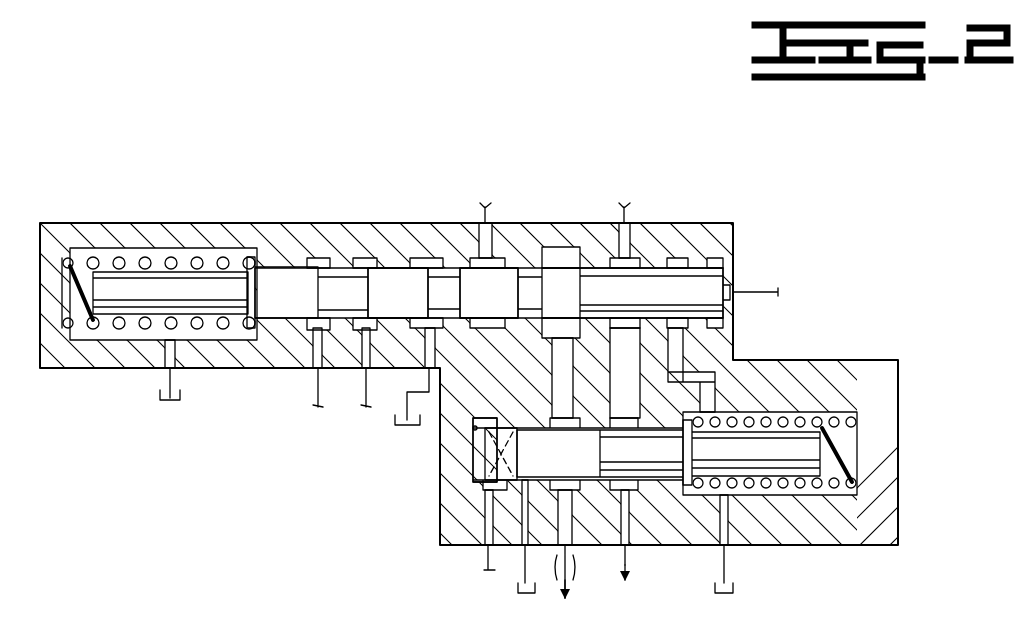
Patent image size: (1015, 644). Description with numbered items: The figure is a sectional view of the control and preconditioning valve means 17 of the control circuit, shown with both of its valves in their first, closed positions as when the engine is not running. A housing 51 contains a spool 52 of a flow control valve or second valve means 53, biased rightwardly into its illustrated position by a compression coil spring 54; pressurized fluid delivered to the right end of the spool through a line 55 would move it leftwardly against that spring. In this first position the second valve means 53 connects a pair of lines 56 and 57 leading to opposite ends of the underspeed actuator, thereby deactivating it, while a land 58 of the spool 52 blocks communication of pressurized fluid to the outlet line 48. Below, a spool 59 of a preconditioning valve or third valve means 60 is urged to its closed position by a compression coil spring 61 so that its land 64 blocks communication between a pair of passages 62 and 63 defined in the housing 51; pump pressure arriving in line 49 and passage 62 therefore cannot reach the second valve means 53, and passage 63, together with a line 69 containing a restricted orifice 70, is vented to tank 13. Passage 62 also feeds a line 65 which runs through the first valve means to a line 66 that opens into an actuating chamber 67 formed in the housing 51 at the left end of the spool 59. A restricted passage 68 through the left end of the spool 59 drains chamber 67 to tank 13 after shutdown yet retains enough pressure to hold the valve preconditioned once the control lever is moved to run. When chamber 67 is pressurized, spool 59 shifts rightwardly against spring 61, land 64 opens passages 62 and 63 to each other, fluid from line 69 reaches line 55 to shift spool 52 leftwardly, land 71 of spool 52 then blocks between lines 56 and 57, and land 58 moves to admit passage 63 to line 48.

The tank 13 is at (160, 398).
The control and preconditioning valve means 17 is at (188, 450).
The outlet line 48 is at (492, 207).
The line 49 is at (628, 207).
The housing 51 is at (707, 232).
The spool 52 is at (275, 252).
The second valve means 53 is at (352, 223).
The compression coil spring 54 is at (125, 262).
The line 55 is at (760, 292).
The line 56 is at (313, 400).
The line 57 is at (366, 400).
The land 58 is at (477, 278).
The spool 59 is at (475, 485).
The third valve means 60 is at (654, 517).
The compression coil spring 61 is at (797, 410).
The passage 62 is at (638, 386).
The passage 63 is at (553, 377).
The land 64 is at (617, 543).
The line 65 is at (628, 572).
The line 66 is at (488, 548).
The actuating chamber 67 is at (473, 428).
The restricted passage 68 is at (470, 462).
The line 69 is at (572, 592).
The restricted orifice 70 is at (550, 585).
The land 71 is at (393, 278).